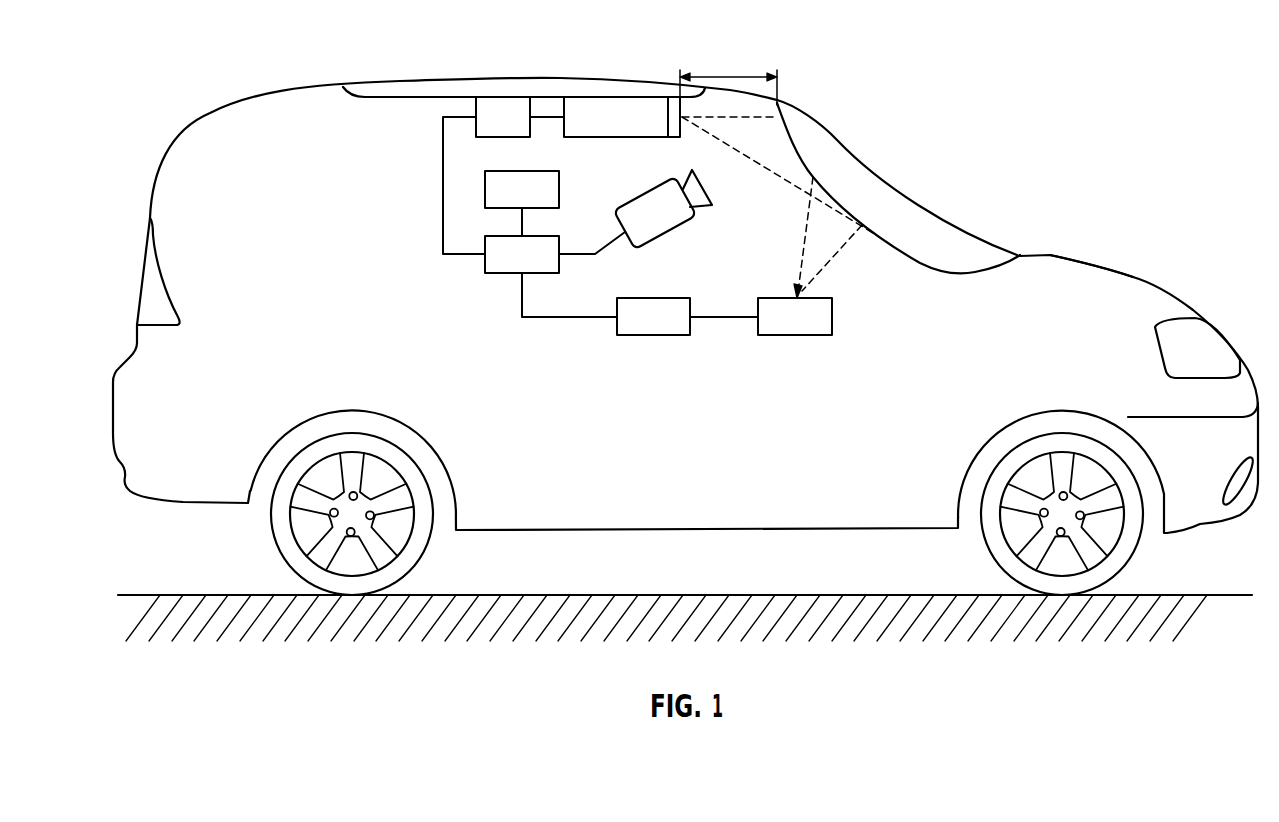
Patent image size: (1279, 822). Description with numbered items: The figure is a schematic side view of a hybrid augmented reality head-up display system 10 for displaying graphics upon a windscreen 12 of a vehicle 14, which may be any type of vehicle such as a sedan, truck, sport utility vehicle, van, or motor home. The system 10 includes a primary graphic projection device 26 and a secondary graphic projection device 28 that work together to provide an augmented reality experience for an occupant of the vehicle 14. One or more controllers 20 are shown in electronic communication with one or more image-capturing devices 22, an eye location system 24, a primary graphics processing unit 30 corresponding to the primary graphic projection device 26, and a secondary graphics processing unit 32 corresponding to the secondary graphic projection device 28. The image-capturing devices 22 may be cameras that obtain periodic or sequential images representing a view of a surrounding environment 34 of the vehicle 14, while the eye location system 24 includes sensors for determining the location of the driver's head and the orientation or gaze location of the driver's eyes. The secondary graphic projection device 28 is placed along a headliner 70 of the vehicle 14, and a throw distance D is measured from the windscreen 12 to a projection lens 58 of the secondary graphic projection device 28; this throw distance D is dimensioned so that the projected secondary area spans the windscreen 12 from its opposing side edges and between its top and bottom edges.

The hybrid augmented reality head-up display system 10 is at (812, 70).
The windscreen 12 is at (915, 196).
The vehicle 14 is at (1087, 265).
The controller 20 is at (534, 268).
The image-capturing device 22 is at (668, 237).
The eye location system 24 is at (534, 203).
The primary graphic projection device 26 is at (807, 331).
The secondary graphic projection device 28 is at (628, 131).
The primary graphics processing unit 30 is at (666, 331).
The secondary graphics processing unit 32 is at (515, 131).
The surrounding environment 34 is at (1055, 118).
The projection lens 58 is at (675, 100).
The headliner 70 is at (547, 92).
The throw distance D is at (729, 73).